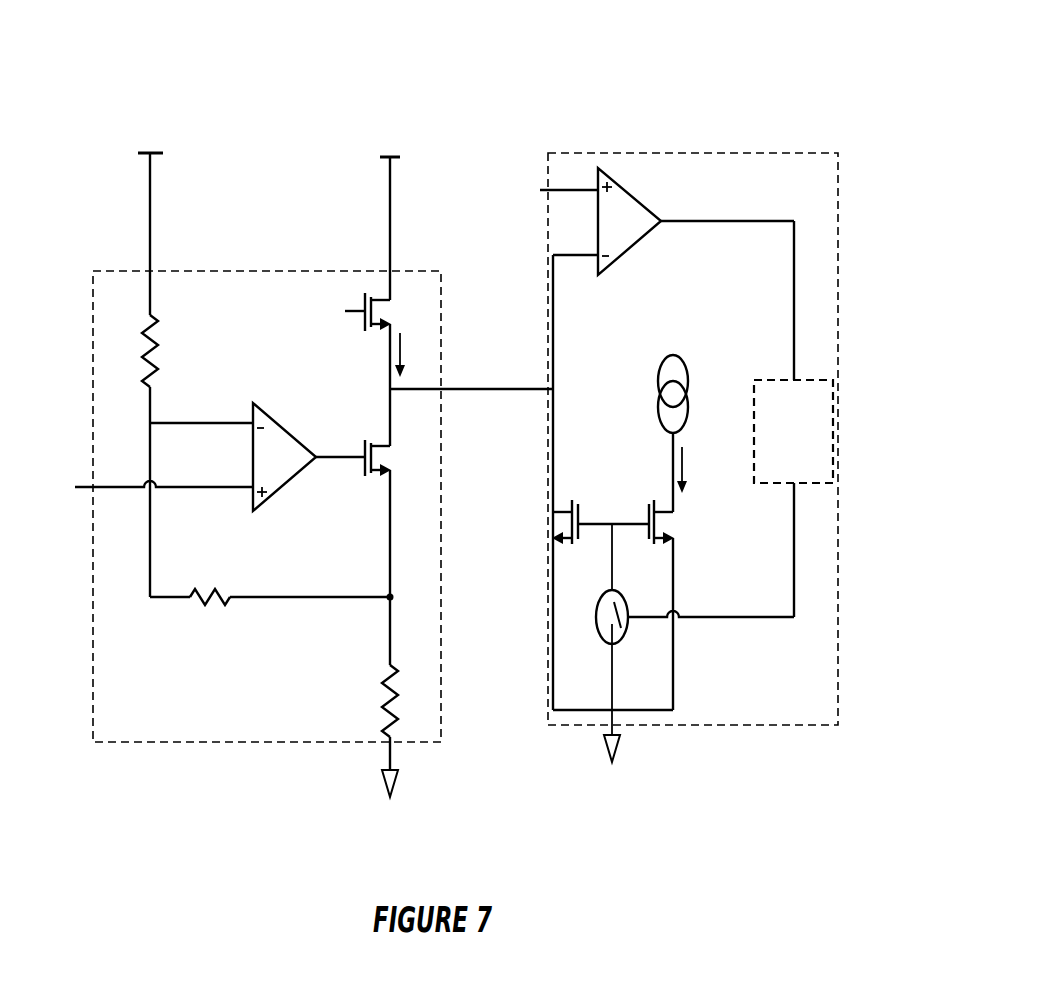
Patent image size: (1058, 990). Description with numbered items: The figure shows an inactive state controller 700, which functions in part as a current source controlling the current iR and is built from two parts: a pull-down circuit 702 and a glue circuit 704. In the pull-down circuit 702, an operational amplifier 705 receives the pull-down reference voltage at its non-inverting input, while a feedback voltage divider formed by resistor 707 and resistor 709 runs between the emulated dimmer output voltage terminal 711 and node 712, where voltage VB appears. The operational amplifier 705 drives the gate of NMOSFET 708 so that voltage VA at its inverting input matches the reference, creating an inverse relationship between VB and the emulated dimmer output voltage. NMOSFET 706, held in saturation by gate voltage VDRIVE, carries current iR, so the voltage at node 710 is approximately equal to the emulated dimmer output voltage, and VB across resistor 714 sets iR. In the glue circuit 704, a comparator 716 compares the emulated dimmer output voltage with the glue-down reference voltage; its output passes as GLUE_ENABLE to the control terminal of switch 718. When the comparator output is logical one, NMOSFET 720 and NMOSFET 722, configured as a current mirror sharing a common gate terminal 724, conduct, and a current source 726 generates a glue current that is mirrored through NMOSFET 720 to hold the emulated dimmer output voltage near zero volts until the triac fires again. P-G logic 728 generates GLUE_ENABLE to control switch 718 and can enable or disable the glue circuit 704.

The inactive state controller 700 is at (706, 100).
The pull-down circuit 702 is at (405, 271).
The glue circuit 704 is at (776, 153).
The operational amplifier 705 is at (290, 467).
The NMOSFET 706 is at (363, 331).
The resistor 707 is at (148, 318).
The NMOSFET 708 is at (363, 477).
The resistor 709 is at (196, 603).
The node 710 is at (398, 395).
The emulated dimmer output voltage terminal 711 is at (163, 153).
The node 712 is at (388, 603).
The resistor 714 is at (385, 697).
The comparator 716 is at (644, 231).
The switch 718 is at (601, 598).
The NMOSFET 720 is at (578, 508).
The NMOSFET 722 is at (660, 505).
The common gate terminal 724 is at (608, 527).
The current source 726 is at (662, 364).
The P-G logic 728 is at (809, 457).